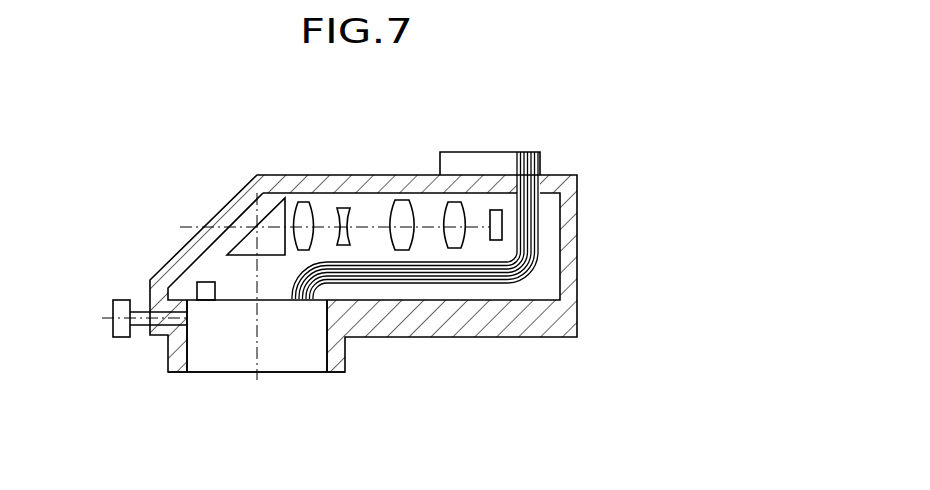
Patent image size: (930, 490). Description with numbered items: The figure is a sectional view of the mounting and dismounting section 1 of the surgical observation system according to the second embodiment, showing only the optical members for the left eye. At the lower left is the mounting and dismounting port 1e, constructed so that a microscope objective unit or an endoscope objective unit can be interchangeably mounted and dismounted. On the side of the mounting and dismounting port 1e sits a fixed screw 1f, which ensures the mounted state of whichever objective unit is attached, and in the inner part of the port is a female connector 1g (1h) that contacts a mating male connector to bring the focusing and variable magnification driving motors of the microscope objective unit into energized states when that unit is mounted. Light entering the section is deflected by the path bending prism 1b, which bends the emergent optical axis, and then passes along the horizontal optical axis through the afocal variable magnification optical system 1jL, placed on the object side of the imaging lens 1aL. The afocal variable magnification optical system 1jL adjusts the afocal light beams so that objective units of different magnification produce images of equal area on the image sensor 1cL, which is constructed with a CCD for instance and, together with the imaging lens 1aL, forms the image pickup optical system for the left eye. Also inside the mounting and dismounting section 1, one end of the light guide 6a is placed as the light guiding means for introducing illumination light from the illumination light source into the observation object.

The mounting and dismounting section 1 is at (605, 272).
The imaging lens 1aL is at (462, 242).
The path bending prism 1b is at (242, 250).
The image sensor 1cL is at (501, 230).
The mounting and dismounting port 1e is at (187, 357).
The fixed screw 1f is at (117, 310).
The female connector 1g is at (135, 264).
The female connector 1h is at (198, 295).
The afocal variable magnification optical system 1jL is at (412, 170).
The light guide 6a is at (533, 218).